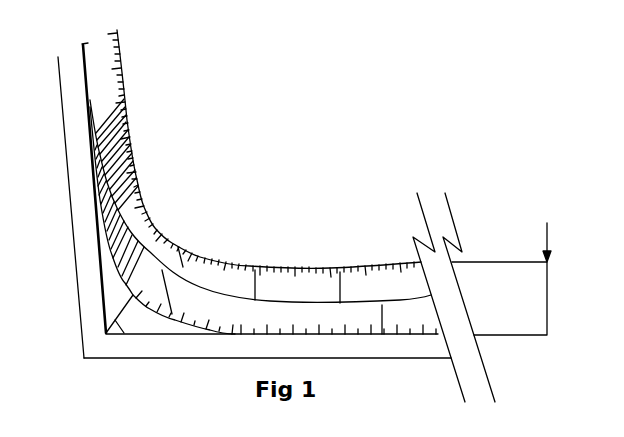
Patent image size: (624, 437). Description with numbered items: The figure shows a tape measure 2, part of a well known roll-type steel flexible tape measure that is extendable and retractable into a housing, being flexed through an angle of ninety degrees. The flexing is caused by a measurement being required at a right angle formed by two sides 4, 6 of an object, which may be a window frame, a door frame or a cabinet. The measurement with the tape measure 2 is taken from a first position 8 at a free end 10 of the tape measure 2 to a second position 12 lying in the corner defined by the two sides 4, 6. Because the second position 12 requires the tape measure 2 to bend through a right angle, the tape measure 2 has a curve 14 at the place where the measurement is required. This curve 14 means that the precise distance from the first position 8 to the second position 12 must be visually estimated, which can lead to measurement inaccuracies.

The tape measure 2 is at (261, 182).
The side 4 is at (82, 193).
The side 6 is at (343, 347).
The first position 8 is at (547, 231).
The free end 10 is at (535, 325).
The second position 12 is at (115, 320).
The curve 14 is at (167, 235).